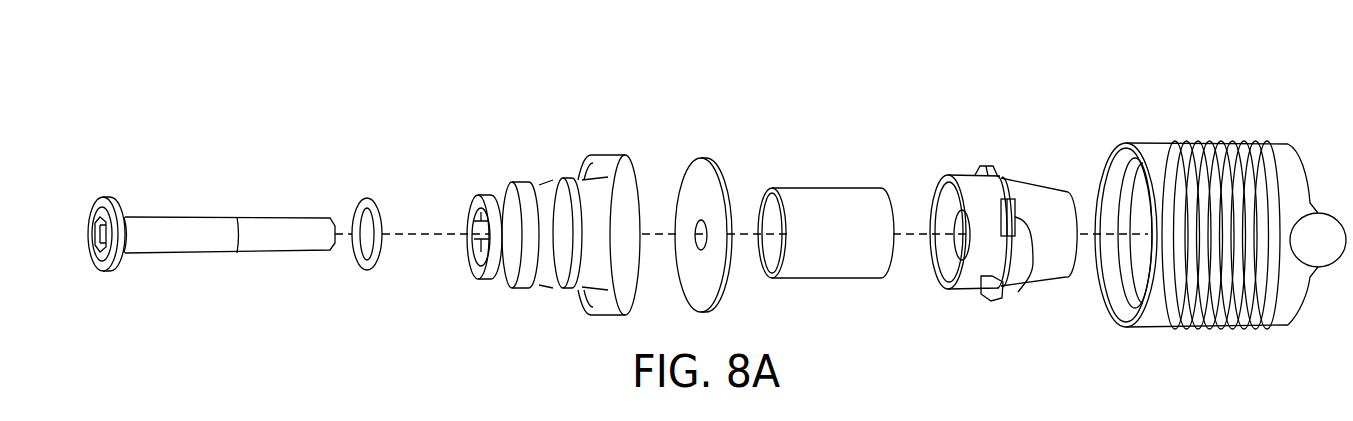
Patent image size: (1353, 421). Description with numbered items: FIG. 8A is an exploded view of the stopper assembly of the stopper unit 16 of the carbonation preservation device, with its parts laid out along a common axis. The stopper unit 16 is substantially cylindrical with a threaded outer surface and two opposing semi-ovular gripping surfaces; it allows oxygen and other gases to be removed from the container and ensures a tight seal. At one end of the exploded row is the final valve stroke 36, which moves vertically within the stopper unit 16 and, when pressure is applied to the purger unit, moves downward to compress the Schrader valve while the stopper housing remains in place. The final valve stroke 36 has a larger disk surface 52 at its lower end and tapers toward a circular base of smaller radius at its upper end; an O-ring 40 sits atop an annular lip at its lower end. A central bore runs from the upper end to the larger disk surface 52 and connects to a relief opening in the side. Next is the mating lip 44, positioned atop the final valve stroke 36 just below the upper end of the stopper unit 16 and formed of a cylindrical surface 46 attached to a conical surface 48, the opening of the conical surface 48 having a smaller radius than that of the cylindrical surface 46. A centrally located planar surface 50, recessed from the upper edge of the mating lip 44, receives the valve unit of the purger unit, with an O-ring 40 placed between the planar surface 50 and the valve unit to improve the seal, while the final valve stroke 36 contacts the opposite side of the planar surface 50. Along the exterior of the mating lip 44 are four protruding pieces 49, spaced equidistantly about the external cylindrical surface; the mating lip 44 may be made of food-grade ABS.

The stopper unit 16 is at (65, 93).
The final valve stroke 36 is at (175, 215).
The O-ring 40 is at (366, 198).
The mating lip 44 is at (1272, 143).
The cylindrical surface 46 is at (847, 188).
The conical surface 48 is at (1030, 182).
The protruding pieces 49 is at (1005, 291).
The planar surface 50 is at (702, 157).
The larger disk surface 52 is at (107, 197).